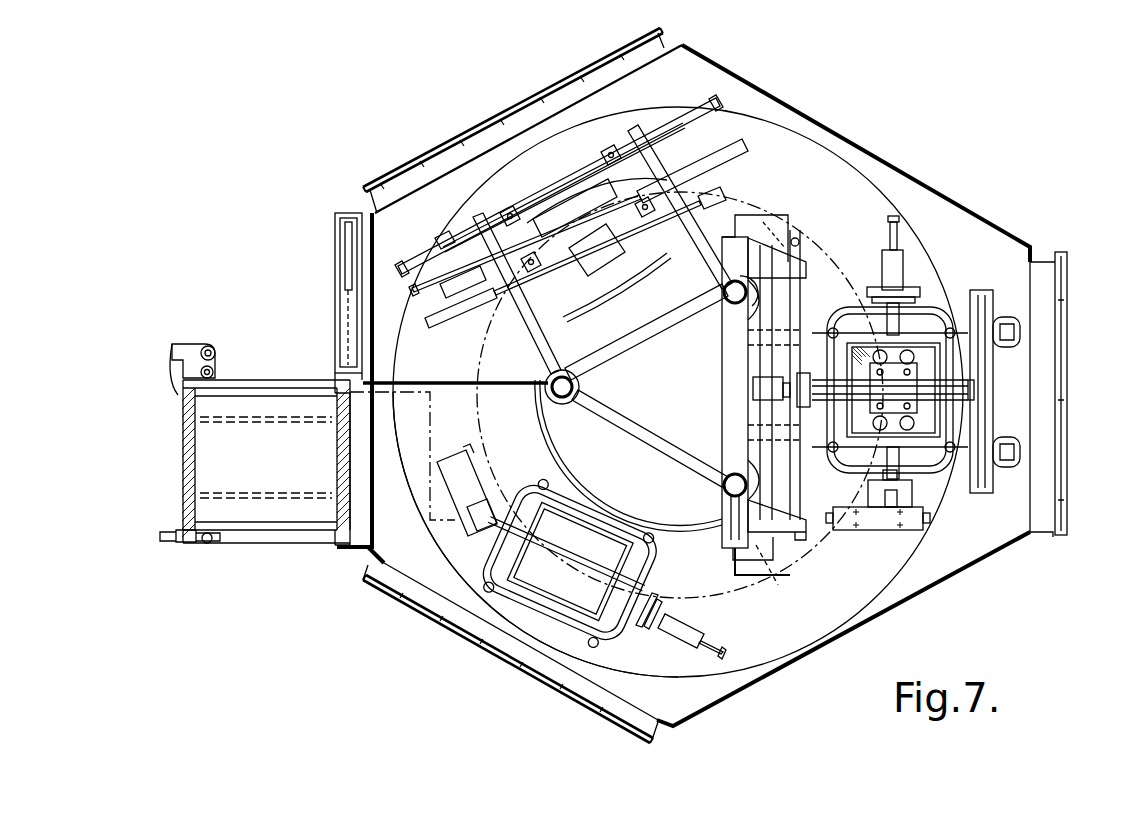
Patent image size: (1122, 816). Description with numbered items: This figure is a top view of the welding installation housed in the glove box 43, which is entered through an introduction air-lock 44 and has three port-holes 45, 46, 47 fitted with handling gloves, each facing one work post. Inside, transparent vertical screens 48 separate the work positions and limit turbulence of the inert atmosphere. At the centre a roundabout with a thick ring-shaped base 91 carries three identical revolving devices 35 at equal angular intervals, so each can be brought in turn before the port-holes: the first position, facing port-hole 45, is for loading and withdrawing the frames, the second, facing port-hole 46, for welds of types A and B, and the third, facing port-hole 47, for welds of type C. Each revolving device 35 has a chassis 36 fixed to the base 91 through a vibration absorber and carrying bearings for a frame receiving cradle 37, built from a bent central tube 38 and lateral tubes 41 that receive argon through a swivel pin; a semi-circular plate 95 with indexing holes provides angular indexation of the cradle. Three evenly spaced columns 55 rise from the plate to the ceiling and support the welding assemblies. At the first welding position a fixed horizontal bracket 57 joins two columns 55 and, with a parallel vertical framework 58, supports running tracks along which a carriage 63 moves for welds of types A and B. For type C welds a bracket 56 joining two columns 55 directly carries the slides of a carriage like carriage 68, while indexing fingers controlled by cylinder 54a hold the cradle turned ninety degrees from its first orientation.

The revolving device 35 is at (913, 263).
The chassis 36 is at (742, 146).
The frame receiving cradle 37 is at (683, 555).
The bent central tube 38 is at (548, 552).
The lateral tubes 41 is at (513, 600).
The glove box 43 is at (1012, 230).
The introduction air-lock 44 is at (240, 542).
The port-hole 45 is at (580, 710).
The port-hole 46 is at (1063, 305).
The port-hole 47 is at (528, 93).
The transparent vertical screens 48 is at (813, 161).
The cylinder 54a is at (690, 103).
The columns 55 is at (722, 460).
The bracket 56 is at (618, 334).
The fixed horizontal bracket 57 is at (737, 343).
The vertical framework 58 is at (992, 383).
The carriage 63 is at (803, 363).
The carriage 68 is at (923, 408).
The base 91 is at (870, 197).
The semi-circular plate 95 is at (581, 534).